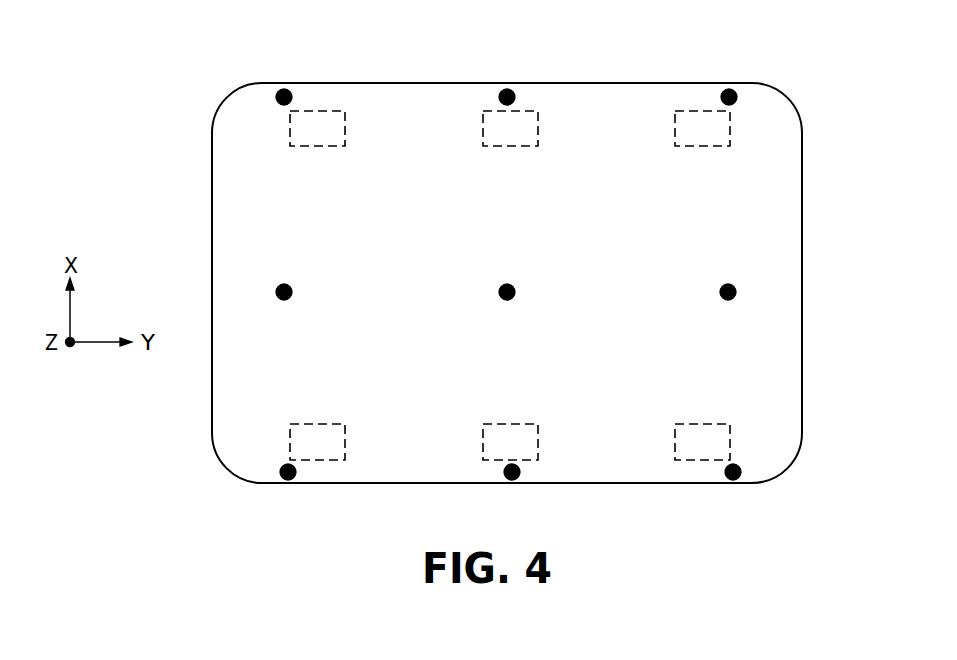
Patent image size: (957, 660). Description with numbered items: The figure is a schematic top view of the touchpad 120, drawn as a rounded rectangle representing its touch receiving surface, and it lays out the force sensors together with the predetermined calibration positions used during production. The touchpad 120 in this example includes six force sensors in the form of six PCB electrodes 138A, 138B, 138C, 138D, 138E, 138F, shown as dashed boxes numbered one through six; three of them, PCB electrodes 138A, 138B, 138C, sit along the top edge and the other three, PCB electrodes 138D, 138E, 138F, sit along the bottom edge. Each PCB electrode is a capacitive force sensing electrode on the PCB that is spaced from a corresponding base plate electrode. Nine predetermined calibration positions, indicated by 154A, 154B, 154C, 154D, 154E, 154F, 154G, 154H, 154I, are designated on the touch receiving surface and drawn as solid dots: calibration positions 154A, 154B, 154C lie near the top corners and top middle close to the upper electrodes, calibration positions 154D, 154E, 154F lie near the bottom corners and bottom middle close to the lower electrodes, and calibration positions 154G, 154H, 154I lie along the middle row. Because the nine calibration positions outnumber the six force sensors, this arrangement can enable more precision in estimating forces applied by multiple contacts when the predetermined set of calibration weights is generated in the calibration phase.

The touchpad 120 is at (212, 205).
The predetermined calibration position P1 154A is at (280, 94).
The predetermined calibration position P2 154B is at (503, 94).
The predetermined calibration position P3 154C is at (725, 94).
The predetermined calibration position P4 154D is at (736, 477).
The predetermined calibration position P5 154E is at (515, 477).
The predetermined calibration position P6 154F is at (291, 477).
The predetermined calibration position P7 154G is at (730, 296).
The predetermined calibration position P8 154H is at (509, 296).
The predetermined calibration position P9 154I is at (286, 296).
The PCB electrode 138A is at (345, 128).
The PCB electrode 138B is at (538, 128).
The PCB electrode 138C is at (730, 128).
The PCB electrode 138D is at (730, 443).
The PCB electrode 138E is at (538, 440).
The PCB electrode 138F is at (345, 440).